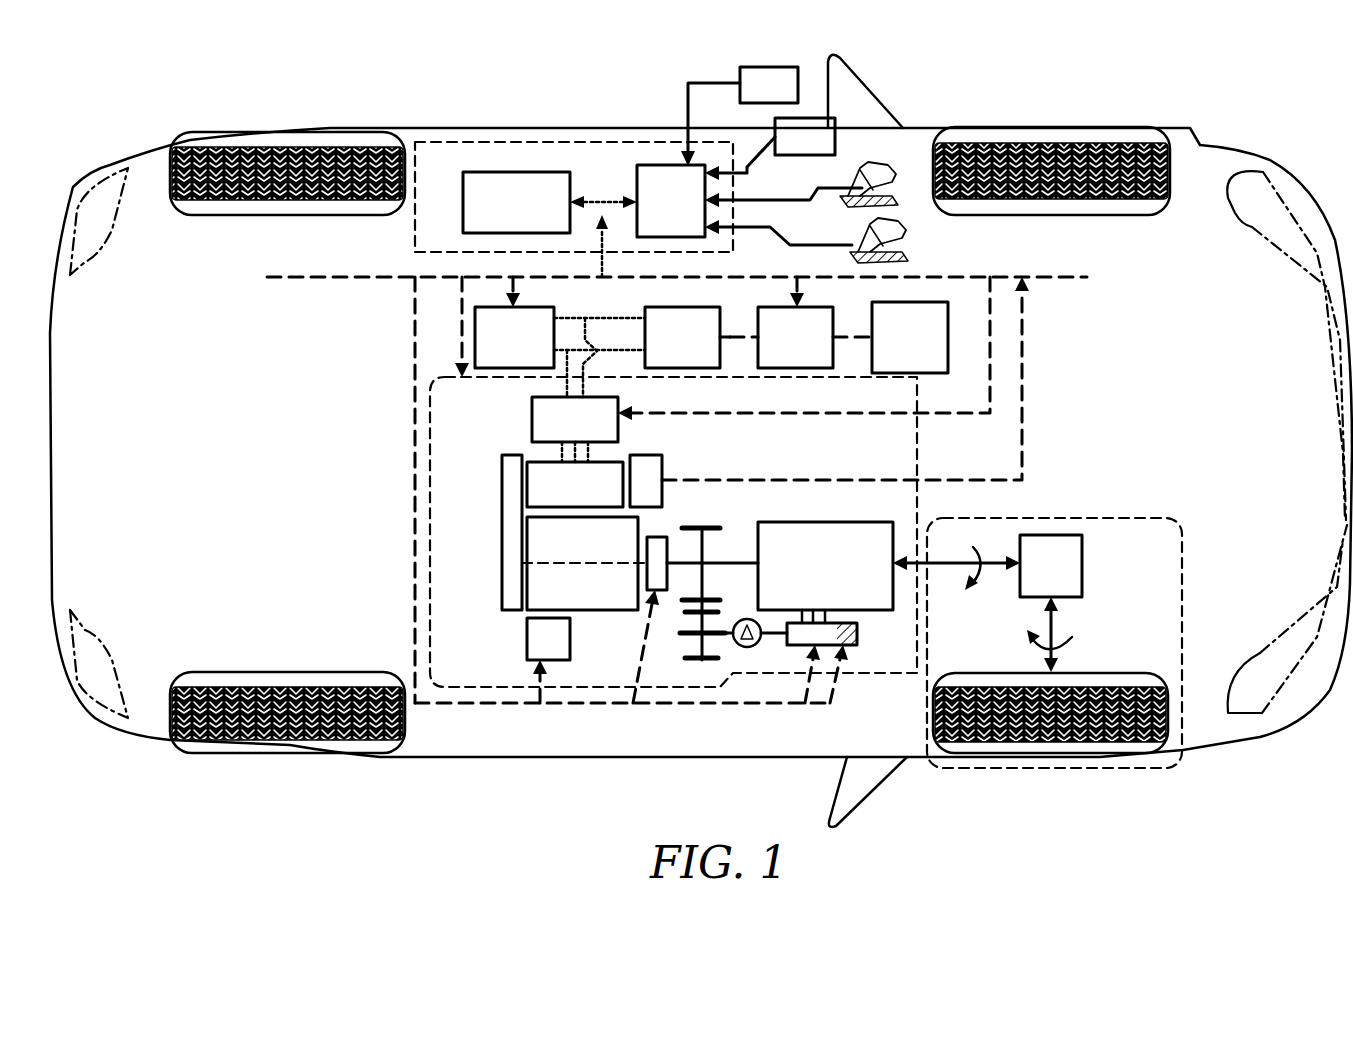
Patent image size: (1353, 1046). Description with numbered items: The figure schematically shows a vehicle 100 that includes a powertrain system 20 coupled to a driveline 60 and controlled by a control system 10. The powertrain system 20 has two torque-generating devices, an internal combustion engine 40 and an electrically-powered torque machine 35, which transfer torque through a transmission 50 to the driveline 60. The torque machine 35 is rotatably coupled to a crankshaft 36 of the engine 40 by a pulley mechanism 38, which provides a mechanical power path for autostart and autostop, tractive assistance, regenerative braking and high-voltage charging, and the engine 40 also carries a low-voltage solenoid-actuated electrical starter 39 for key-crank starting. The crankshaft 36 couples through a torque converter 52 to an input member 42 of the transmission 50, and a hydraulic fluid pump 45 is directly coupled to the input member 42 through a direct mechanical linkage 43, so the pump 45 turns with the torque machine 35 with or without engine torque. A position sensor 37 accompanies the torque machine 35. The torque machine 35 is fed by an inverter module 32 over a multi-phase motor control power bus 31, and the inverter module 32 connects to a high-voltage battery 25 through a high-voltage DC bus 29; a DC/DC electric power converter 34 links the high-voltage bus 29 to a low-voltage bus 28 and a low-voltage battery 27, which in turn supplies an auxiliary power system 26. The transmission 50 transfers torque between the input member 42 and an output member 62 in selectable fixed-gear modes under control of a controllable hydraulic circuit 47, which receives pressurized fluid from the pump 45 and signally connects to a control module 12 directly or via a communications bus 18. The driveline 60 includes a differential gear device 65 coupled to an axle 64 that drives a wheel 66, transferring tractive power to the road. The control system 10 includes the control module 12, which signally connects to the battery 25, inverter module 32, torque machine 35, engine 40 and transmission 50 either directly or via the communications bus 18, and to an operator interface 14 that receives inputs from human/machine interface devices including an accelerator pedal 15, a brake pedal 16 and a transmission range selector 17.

The vehicle 100 is at (1150, 247).
The control system 10 is at (443, 174).
The control module 12 is at (503, 214).
The operator interface 14 is at (658, 213).
The accelerator pedal 15 is at (845, 238).
The brake pedal 16 is at (840, 182).
The transmission range selector 17 is at (793, 148).
The communications bus 18 is at (758, 97).
The powertrain system 20 is at (930, 435).
The high-voltage battery 25 is at (501, 349).
The auxiliary power system 26 is at (897, 349).
The low-voltage battery 27 is at (782, 349).
The low-voltage bus 28 is at (730, 337).
The high-voltage DC bus 29 is at (613, 348).
The multi-phase motor control power bus 31 is at (560, 452).
The inverter module 32 is at (562, 432).
The DC/DC electric power converter 34 is at (669, 349).
The electrically-powered torque machine 35 is at (562, 497).
The crankshaft 36 is at (595, 560).
The position sensor 37 is at (662, 475).
The pulley mechanism 38 is at (502, 537).
The low-voltage solenoid-actuated electrical starter 39 is at (527, 645).
The internal combustion engine 40 is at (570, 597).
The input member 42 is at (740, 563).
The direct mechanical linkage 43 is at (710, 660).
The hydraulic fluid pump 45 is at (745, 648).
The controllable hydraulic circuit 47 is at (805, 647).
The transmission 50 is at (812, 575).
The torque converter 52 is at (667, 585).
The driveline 60 is at (1093, 505).
The output member 62 is at (950, 563).
The axle 64 is at (1068, 628).
The differential gear device 65 is at (1038, 578).
The wheel 66 is at (1018, 658).